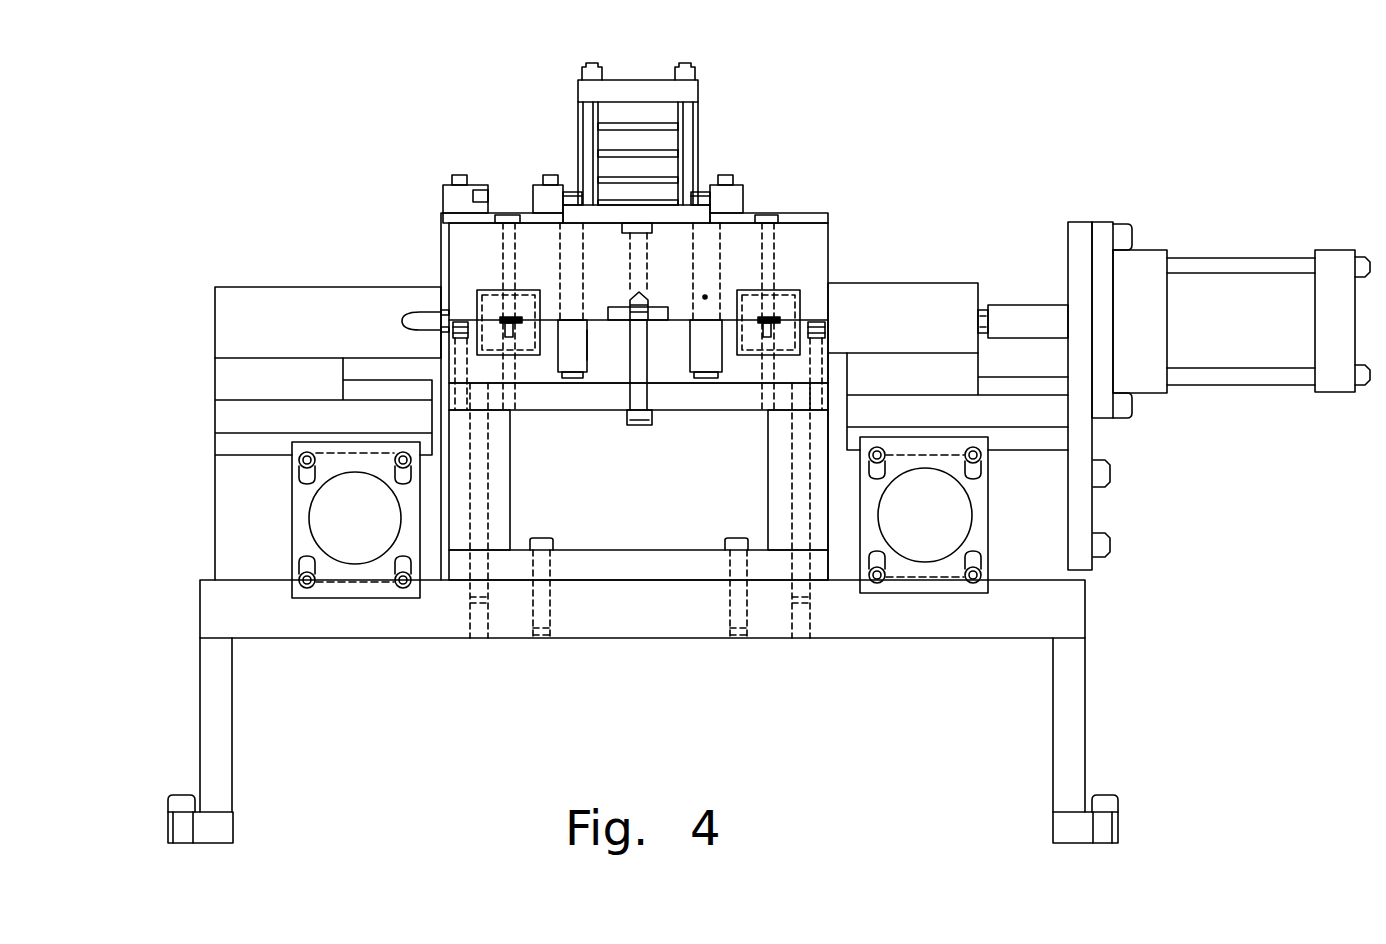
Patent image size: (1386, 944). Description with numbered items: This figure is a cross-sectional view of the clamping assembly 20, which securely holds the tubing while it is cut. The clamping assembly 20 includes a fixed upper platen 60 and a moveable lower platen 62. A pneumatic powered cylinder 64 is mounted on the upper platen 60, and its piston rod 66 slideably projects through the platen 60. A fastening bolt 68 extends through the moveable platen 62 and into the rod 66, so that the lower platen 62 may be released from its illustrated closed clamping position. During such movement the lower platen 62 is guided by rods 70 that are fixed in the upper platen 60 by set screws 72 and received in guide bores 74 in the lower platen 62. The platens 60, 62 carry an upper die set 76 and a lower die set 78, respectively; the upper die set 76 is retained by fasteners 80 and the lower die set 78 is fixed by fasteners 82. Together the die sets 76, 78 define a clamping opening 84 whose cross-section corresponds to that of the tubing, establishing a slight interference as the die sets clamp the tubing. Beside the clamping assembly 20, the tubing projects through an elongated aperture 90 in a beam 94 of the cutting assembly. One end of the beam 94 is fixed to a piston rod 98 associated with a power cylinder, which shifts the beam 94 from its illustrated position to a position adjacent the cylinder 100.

The clamping assembly 20 is at (757, 121).
The upper platen 60 is at (460, 237).
The moveable lower platen 62 is at (615, 408).
The pneumatic powered cylinder 64 is at (578, 92).
The piston rod 66 is at (638, 270).
The fastening bolt 68 is at (643, 425).
The rods 70 is at (566, 283).
The set screws 72 is at (571, 297).
The guide bores 74 is at (572, 339).
The upper die set 76 is at (488, 297).
The lower die set 78 is at (525, 337).
The fasteners 80 is at (515, 215).
The fasteners 82 is at (512, 335).
The clamping opening 84 is at (500, 321).
The elongated aperture 90 is at (428, 311).
The beam 94 is at (235, 320).
The piston rod 98 is at (1022, 320).
The cylinder 100 is at (1240, 313).